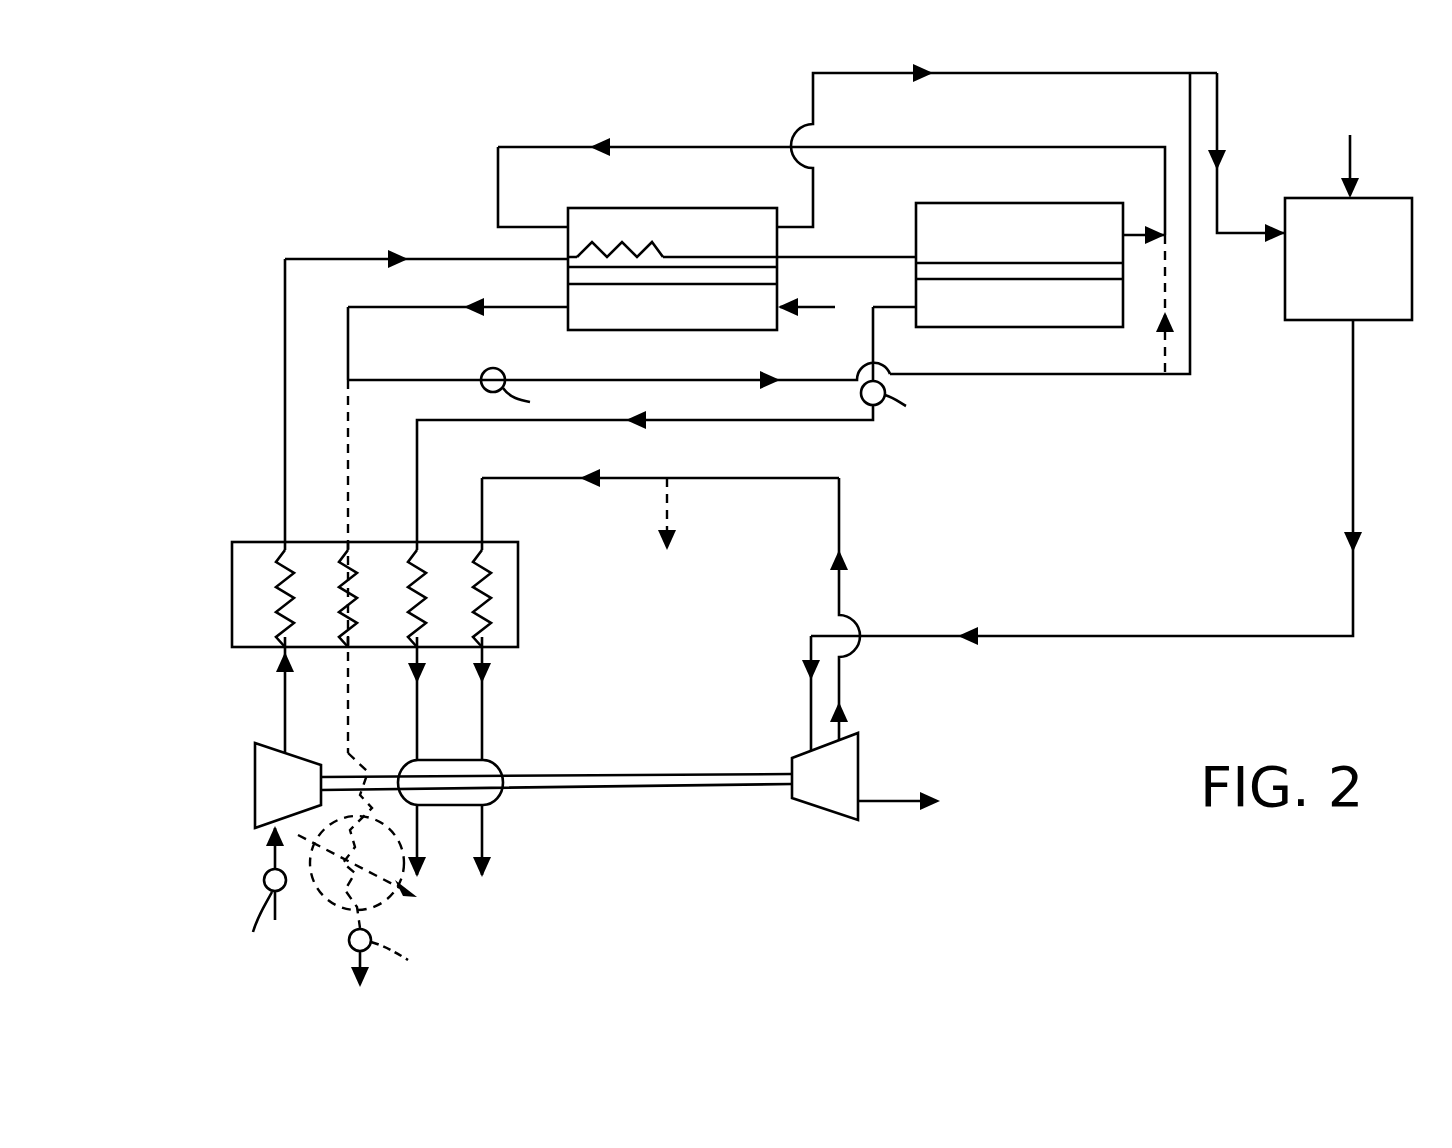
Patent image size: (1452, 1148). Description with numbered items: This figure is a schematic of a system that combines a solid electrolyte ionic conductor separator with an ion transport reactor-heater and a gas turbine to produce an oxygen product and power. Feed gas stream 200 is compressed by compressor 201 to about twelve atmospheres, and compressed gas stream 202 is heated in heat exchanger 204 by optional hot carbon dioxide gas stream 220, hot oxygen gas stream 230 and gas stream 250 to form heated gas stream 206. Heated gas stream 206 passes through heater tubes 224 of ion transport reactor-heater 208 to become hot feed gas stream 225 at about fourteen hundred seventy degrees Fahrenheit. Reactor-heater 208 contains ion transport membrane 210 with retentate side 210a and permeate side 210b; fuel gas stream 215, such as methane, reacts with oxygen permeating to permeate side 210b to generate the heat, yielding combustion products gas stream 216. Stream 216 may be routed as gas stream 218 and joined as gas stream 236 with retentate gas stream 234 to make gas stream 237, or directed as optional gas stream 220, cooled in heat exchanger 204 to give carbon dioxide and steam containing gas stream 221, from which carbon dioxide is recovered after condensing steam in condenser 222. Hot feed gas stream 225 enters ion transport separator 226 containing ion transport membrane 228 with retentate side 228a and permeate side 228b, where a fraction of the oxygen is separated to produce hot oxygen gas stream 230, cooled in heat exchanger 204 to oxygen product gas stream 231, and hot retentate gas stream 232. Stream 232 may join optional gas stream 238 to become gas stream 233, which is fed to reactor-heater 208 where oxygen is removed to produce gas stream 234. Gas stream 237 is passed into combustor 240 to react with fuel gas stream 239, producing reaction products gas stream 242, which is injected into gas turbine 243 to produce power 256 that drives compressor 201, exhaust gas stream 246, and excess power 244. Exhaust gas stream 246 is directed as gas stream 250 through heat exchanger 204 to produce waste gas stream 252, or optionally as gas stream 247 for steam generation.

The feed gas stream 200 is at (272, 855).
The compressor 201 is at (255, 788).
The compressed gas stream 202 is at (285, 710).
The heat exchanger 204 is at (519, 606).
The heated gas stream 206 is at (360, 258).
The ion transport reactor-heater 208 is at (618, 208).
The ion transport membrane 210 is at (720, 294).
The retentate side 210a is at (752, 267).
The permeate side 210b is at (720, 287).
The fuel gas stream 215 is at (818, 307).
The combustion products gas stream 216 is at (500, 305).
The gas stream 218 is at (382, 380).
The optional gas stream 220 is at (348, 455).
The carbon dioxide and steam containing gas stream 221 is at (353, 766).
The condenser 222 is at (418, 905).
The heater tubes 224 is at (635, 247).
The hot feed gas stream 225 is at (818, 257).
The ion transport separator 226 is at (1035, 203).
The ion transport membrane 228 is at (981, 270).
The retentate side 228a is at (1030, 263).
The permeate side 228b is at (1054, 279).
The hot oxygen gas stream 230 is at (873, 333).
The oxygen product gas stream 231 is at (445, 745).
The hot retentate gas stream 232 is at (1140, 232).
The gas stream 233 is at (1033, 147).
The retentate gas stream 234 is at (813, 73).
The gas stream 236 is at (1190, 118).
The gas stream 237 is at (1217, 130).
The optional gas stream 238 is at (1163, 346).
The fuel gas stream 239 is at (1352, 165).
The combustor 240 is at (1412, 303).
The reaction products gas stream 242 is at (1353, 505).
The gas turbine 243 is at (858, 760).
The excess power 244 is at (893, 802).
The exhaust gas stream 246 is at (839, 675).
The gas stream 247 is at (667, 500).
The gas stream 250 is at (545, 482).
The waste gas stream 252 is at (488, 748).
The power 256 is at (707, 787).